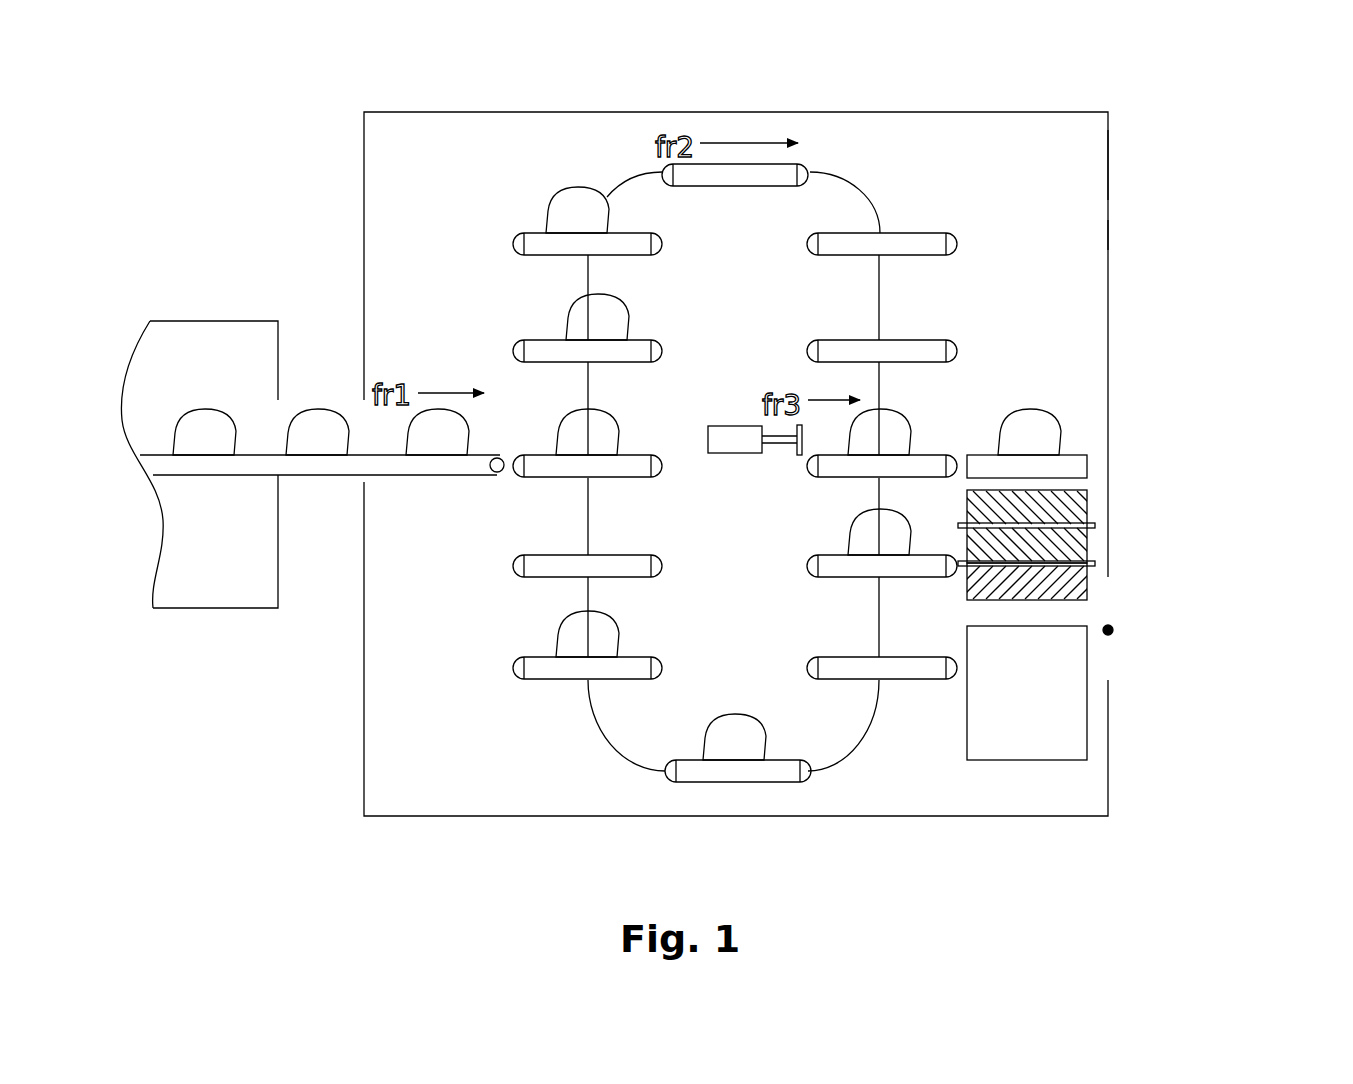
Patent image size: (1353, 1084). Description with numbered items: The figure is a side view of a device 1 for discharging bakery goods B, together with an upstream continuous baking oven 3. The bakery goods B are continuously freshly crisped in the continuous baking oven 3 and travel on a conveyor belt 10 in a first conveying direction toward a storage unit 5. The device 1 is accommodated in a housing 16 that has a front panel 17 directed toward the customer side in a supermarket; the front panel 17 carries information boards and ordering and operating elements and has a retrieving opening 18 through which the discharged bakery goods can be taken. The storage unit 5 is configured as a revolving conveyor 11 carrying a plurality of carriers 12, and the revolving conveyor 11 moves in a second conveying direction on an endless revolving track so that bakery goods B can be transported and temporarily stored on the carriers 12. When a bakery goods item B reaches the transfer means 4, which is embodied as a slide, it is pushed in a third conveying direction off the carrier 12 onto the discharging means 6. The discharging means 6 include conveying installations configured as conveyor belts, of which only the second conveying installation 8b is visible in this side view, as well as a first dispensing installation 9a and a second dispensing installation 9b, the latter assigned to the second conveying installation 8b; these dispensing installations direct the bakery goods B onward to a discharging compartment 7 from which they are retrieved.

The device 1 is at (332, 188).
The continuous baking oven 3 is at (180, 610).
The bakery goods B is at (202, 440).
The conveyor belt 10 is at (318, 478).
The revolving conveyor 11 is at (553, 725).
The carriers 12 is at (540, 238).
The transfer means 4 is at (735, 425).
The storage unit 5 is at (889, 744).
The discharging means 6 is at (1020, 360).
The discharging compartment 7 is at (1087, 708).
The second conveying installation 8b is at (1060, 462).
The first dispensing installation 9a is at (1087, 590).
The second dispensing installation 9b is at (1087, 490).
The housing 16 is at (1112, 161).
The front panel 17 is at (1108, 235).
The retrieving opening 18 is at (1116, 628).